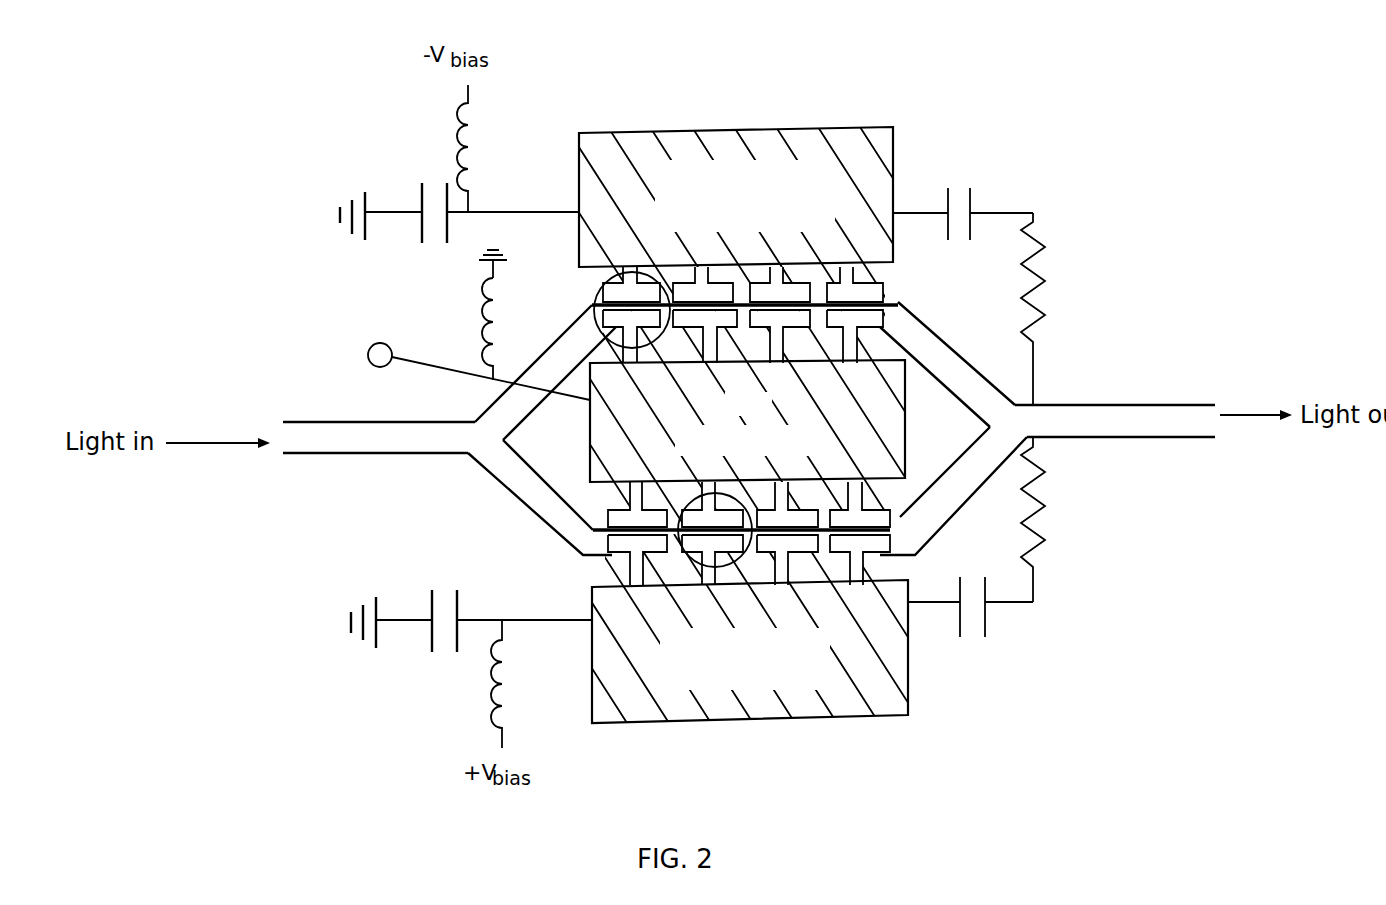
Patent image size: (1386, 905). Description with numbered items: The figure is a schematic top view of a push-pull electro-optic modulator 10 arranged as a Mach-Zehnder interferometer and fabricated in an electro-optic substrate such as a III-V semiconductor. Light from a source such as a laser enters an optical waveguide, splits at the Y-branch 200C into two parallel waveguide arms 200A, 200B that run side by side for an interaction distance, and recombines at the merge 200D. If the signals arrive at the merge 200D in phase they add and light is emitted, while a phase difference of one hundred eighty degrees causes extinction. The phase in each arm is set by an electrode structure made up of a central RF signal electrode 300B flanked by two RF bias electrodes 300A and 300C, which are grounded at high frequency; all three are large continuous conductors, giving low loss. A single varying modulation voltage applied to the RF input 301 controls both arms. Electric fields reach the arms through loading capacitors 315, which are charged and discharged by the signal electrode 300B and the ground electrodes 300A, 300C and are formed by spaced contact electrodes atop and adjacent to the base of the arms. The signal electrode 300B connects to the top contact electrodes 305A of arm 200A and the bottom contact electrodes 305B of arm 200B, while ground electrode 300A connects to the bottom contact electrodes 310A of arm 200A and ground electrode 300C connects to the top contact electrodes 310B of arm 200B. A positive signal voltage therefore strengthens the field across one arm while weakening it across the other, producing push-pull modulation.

The modulator 10 is at (337, 85).
The RF input 301 is at (348, 366).
The waveguide arm 200A is at (553, 319).
The waveguide arm 200B is at (563, 552).
The Y-branch 200C is at (468, 462).
The merge 200D is at (1033, 455).
The RF bias electrode 300A is at (893, 128).
The RF signal electrode 300B is at (907, 390).
The RF bias electrode 300C is at (890, 708).
The top contact electrodes 305A is at (887, 300).
The bottom contact electrodes 305B is at (893, 512).
The bottom contact electrodes 310A is at (885, 270).
The top contact electrodes 310B is at (886, 548).
The loading capacitors 315 is at (598, 297).